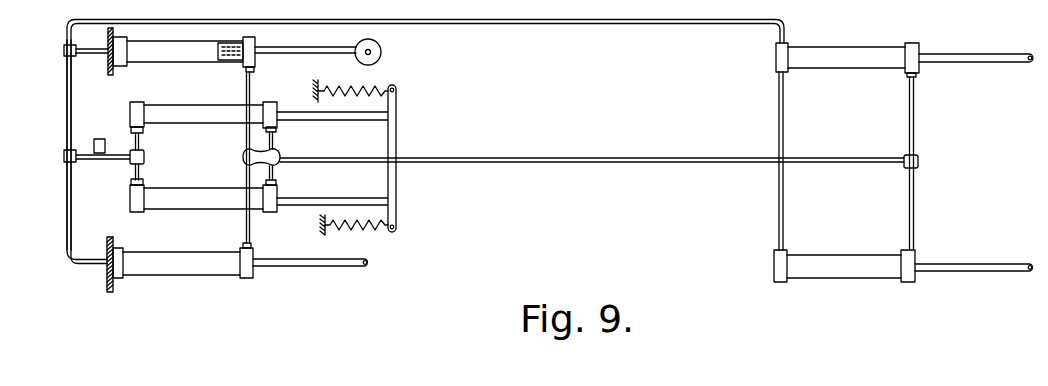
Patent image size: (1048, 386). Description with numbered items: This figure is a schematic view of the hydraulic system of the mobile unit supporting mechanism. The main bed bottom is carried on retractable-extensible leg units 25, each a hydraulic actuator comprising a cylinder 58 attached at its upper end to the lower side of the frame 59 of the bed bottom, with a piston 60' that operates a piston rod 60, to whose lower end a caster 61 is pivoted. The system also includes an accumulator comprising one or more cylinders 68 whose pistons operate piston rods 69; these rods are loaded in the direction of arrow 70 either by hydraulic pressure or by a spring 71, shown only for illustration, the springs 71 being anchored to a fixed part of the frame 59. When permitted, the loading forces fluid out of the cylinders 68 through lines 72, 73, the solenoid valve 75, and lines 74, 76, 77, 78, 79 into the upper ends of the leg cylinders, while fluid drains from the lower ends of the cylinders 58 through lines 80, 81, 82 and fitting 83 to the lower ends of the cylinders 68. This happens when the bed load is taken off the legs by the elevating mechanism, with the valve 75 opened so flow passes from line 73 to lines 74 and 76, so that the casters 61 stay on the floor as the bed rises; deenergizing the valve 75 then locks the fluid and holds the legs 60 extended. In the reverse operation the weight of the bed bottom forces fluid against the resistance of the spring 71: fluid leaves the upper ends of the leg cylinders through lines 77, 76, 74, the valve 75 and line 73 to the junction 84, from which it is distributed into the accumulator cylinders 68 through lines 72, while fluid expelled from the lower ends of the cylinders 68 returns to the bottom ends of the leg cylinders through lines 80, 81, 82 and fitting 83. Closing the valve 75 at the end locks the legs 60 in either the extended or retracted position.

The retractable-extensible leg unit 25 is at (190, 62).
The cylinder 58 is at (178, 42).
The frame 59 is at (108, 34).
The piston rod 60 is at (974, 148).
The piston 60' is at (292, 169).
The caster 61 is at (380, 53).
The accumulator cylinder 68 is at (230, 105).
The piston rod 69 is at (352, 120).
The arrow 70 is at (452, 143).
The spring 71 is at (375, 84).
The line 72 is at (135, 128).
The line 73 is at (112, 165).
The line 74 is at (92, 160).
The solenoid valve 75 is at (100, 141).
The line 76 is at (71, 93).
The line 77 is at (104, 52).
The line 78 is at (505, 25).
The line 79 is at (779, 110).
The line 80 is at (246, 130).
The line 81 is at (544, 163).
The line 82 is at (275, 140).
The fitting 83 is at (245, 165).
The junction 84 is at (146, 154).